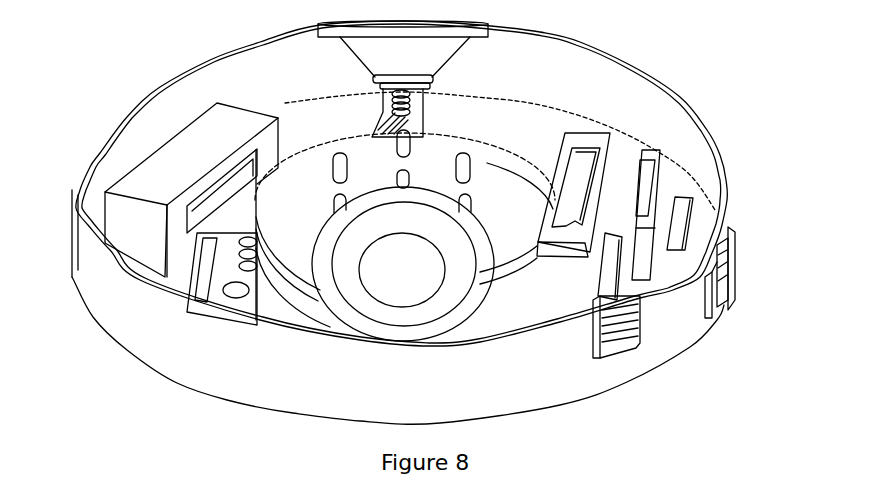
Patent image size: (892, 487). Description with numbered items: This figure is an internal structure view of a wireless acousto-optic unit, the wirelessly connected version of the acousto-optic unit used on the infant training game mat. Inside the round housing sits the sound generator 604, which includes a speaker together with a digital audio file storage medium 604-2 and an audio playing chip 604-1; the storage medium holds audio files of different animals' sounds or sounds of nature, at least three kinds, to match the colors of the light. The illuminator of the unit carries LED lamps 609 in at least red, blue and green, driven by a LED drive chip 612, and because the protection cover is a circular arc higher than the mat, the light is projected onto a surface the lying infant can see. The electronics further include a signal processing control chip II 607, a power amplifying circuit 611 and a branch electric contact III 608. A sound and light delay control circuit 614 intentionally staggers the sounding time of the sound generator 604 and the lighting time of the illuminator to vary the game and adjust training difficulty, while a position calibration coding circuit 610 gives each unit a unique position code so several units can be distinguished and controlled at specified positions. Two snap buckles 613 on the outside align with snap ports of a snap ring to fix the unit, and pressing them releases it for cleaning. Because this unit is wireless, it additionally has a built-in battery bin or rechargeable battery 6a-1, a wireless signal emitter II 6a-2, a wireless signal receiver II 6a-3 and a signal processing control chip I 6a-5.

The sound generator 604 is at (330, 237).
The audio playing chip 604-1 is at (378, 118).
The digital audio file storage medium 604-2 is at (420, 96).
The signal processing control chip II 607 is at (653, 153).
The branch electric contact III 608 is at (737, 258).
The LED lamps 609 is at (468, 156).
The position calibration coding circuit 610 is at (603, 283).
The power amplifying circuit 611 is at (333, 142).
The LED drive chip 612 is at (682, 195).
The snap buckles 613 is at (638, 315).
The sound and light delay control circuit 614 is at (252, 277).
The built-in battery bin or rechargeable battery 6a-1 is at (205, 130).
The wireless signal emitter II 6a-2 is at (170, 247).
The wireless signal receiver II 6a-3 is at (194, 297).
The signal processing control chip I 6a-5 is at (553, 160).